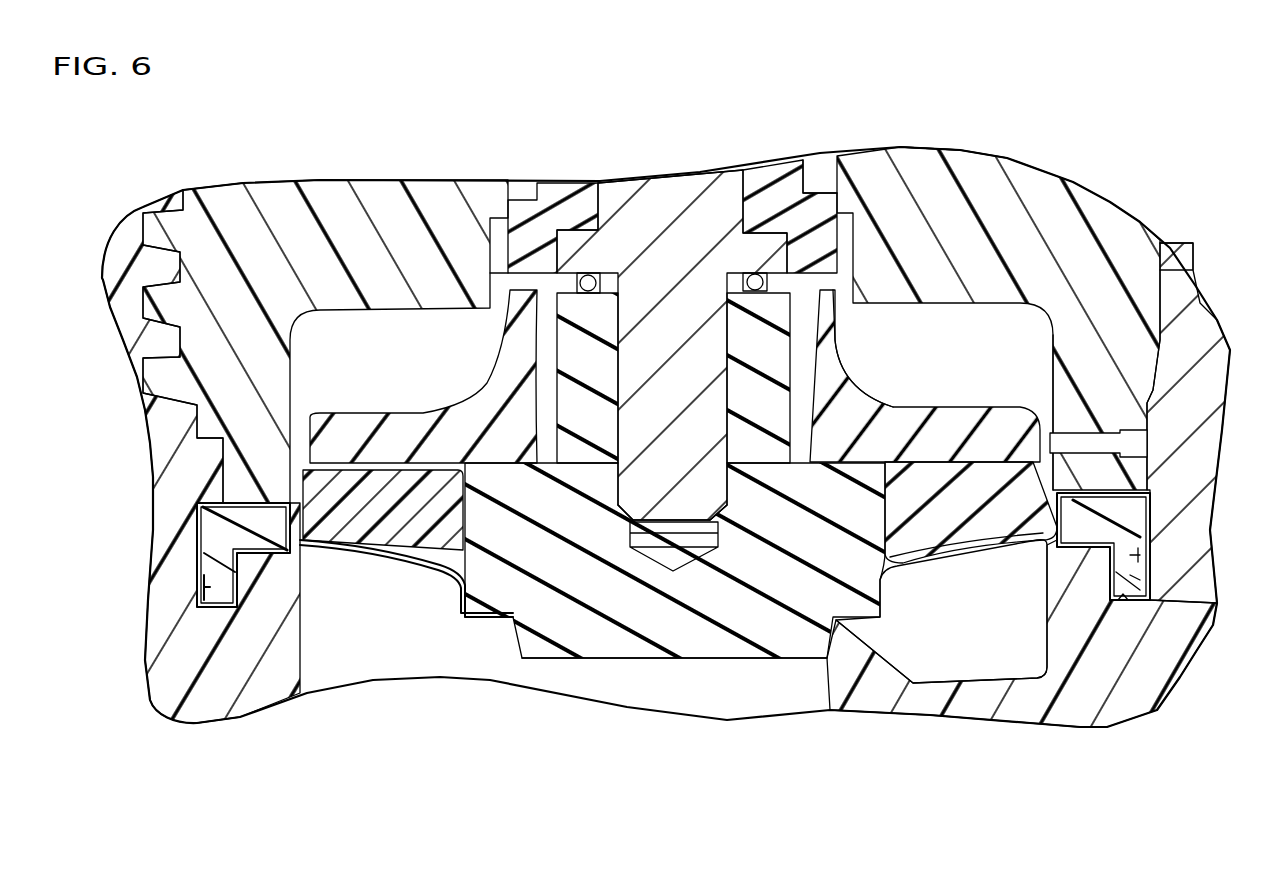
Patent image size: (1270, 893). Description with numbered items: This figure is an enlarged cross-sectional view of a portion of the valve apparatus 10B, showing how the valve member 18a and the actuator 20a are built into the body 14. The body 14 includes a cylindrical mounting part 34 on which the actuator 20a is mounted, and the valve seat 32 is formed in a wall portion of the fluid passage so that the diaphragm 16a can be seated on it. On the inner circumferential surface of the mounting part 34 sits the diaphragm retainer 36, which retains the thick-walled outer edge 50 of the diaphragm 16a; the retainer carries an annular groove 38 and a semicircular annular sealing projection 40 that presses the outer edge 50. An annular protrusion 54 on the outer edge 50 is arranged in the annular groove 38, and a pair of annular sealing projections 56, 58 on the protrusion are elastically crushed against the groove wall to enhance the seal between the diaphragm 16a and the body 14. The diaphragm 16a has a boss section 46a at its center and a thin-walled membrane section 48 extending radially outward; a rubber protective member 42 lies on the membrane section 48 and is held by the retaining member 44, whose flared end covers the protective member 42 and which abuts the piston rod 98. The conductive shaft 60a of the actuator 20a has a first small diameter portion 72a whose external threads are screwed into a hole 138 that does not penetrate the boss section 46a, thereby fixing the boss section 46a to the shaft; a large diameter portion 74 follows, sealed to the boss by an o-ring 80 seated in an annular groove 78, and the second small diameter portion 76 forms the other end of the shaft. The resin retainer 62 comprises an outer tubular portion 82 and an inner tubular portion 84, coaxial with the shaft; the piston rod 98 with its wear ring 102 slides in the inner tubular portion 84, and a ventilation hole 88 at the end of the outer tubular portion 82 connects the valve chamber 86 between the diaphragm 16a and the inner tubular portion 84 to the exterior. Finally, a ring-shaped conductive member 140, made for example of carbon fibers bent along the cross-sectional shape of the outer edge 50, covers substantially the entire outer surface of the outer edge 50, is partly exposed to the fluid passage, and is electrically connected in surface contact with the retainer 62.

The valve apparatus 10B is at (224, 115).
The body 14 is at (1187, 697).
The diaphragm 16a is at (760, 657).
The valve member 18a is at (880, 362).
The actuator 20a is at (696, 174).
The valve seat 32 is at (840, 614).
The mounting part 34 is at (1210, 377).
The diaphragm retainer 36 is at (1053, 577).
The annular groove 38 is at (1123, 598).
The annular sealing projection 40 is at (260, 550).
The protective member 42 is at (963, 523).
The retaining member 44 is at (953, 407).
The boss section 46a is at (603, 653).
The membrane section 48 is at (383, 560).
The outer edge 50 is at (1130, 514).
The annular protrusion 54 is at (223, 583).
The annular sealing projection 56 is at (1147, 578).
The annular sealing projection 58 is at (1147, 556).
The conductive shaft 60a is at (697, 493).
The retainer 62 is at (1113, 222).
The first small diameter portion 72a is at (655, 478).
The large diameter portion 74 is at (760, 240).
The second small diameter portion 76 is at (662, 192).
The annular groove 78 is at (592, 280).
The o-ring 80 is at (753, 283).
The outer tubular portion 82 is at (1153, 290).
The inner tubular portion 84 is at (915, 165).
The valve chamber 86 is at (1027, 327).
The ventilation hole 88 is at (1130, 447).
The piston rod 98 is at (568, 200).
The wear ring 102 is at (815, 160).
The hole 138 is at (727, 400).
The conductive member 140 is at (203, 603).